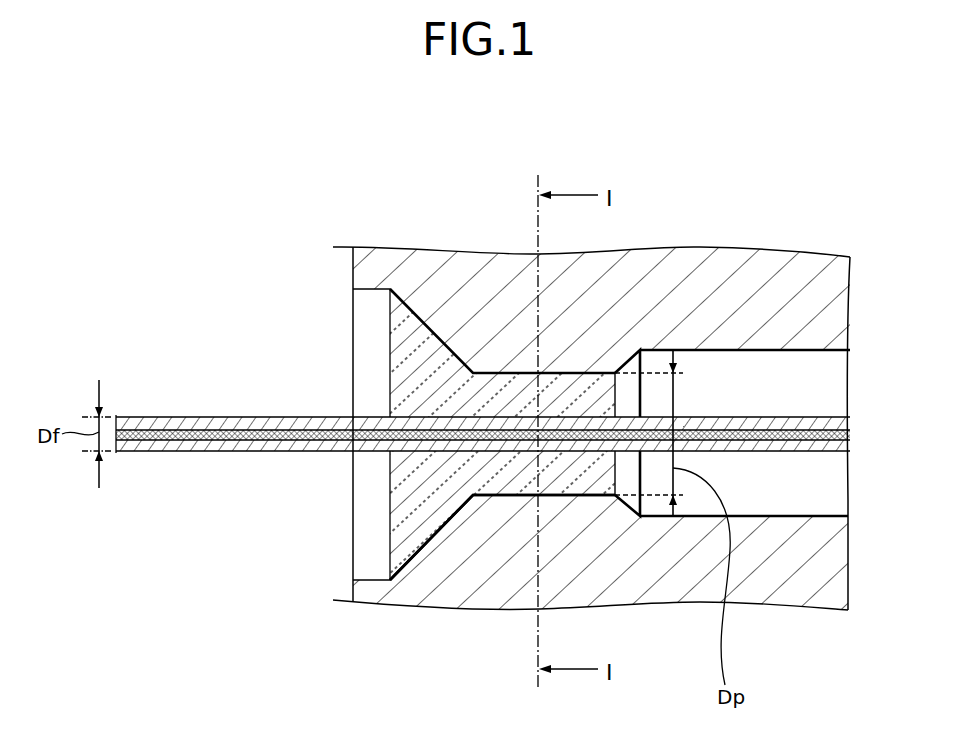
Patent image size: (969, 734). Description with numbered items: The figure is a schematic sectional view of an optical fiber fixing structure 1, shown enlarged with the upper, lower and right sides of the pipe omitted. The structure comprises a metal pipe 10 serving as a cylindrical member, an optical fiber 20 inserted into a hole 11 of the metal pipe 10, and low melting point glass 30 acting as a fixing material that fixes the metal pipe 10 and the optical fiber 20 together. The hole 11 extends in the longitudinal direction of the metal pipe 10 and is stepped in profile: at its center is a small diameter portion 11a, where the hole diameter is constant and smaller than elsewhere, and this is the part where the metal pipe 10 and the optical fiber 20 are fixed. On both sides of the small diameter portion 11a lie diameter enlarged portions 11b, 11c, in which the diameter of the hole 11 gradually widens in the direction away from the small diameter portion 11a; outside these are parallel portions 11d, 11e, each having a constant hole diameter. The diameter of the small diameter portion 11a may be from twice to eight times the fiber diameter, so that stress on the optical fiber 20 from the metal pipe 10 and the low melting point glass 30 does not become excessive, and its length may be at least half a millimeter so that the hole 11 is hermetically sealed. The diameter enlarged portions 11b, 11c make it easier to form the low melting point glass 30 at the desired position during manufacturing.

The optical fiber fixing structure 1 is at (488, 397).
The metal pipe 10 is at (710, 247).
The hole 11 is at (570, 430).
The small diameter portion 11a is at (497, 477).
The diameter enlarged portion 11b is at (440, 338).
The diameter enlarged portion 11c is at (630, 358).
The parallel portion 11d is at (371, 288).
The parallel portion 11e is at (803, 349).
The optical fiber 20 is at (186, 417).
The low melting point glass 30 is at (445, 523).